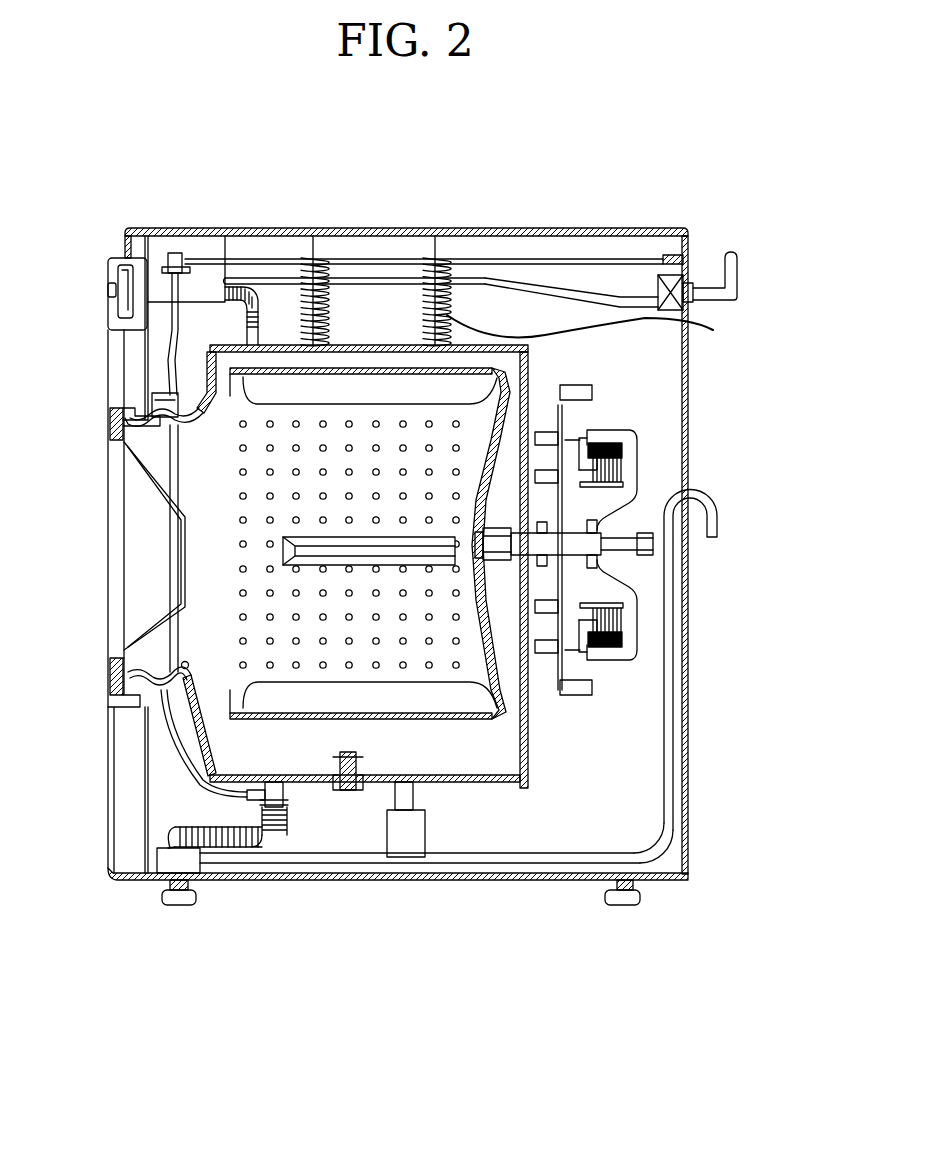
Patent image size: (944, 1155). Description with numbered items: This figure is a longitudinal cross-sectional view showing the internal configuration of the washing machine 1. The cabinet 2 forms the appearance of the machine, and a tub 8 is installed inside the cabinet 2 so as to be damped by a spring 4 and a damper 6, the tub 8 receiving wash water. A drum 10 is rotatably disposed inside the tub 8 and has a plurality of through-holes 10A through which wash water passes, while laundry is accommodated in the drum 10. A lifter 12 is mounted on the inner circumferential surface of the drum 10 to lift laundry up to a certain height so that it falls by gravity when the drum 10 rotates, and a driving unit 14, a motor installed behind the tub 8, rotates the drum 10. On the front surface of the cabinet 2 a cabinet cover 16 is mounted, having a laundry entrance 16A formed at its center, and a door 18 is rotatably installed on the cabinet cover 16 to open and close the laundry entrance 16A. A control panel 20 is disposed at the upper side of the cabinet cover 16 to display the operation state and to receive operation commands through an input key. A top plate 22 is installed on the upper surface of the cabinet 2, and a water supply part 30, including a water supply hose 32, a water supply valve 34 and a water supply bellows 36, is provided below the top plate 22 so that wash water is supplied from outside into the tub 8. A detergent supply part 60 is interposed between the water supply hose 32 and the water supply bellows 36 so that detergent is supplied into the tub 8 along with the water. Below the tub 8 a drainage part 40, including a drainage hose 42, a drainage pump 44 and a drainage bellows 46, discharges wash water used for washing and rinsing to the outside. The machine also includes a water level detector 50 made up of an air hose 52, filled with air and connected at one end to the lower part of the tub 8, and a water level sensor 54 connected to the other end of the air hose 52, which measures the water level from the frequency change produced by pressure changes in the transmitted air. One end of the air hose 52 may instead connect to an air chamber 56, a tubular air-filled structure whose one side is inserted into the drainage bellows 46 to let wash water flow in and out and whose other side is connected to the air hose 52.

The washing machine 1 is at (65, 90).
The cabinet 2 is at (421, 522).
The spring 4 is at (586, 329).
The damper 6 is at (403, 862).
The tub 8 is at (524, 368).
The drum 10 is at (496, 575).
The through-holes 10A is at (482, 660).
The lifter 12 is at (118, 428).
The driving unit 14 is at (628, 582).
The cabinet cover 16 is at (110, 740).
The laundry entrance 16A is at (112, 415).
The door 18 is at (115, 557).
The control panel 20 is at (120, 297).
The top plate 22 is at (662, 232).
The water supply part 30 is at (461, 242).
The water supply hose 32 is at (485, 275).
The water supply valve 34 is at (627, 307).
The water supply bellows 36 is at (330, 260).
The drainage part 40 is at (437, 739).
The drainage hose 42 is at (207, 947).
The drainage pump 44 is at (190, 860).
The drainage bellows 46 is at (257, 860).
The water level detector 50 is at (186, 280).
The air hose 52 is at (170, 250).
The water level sensor 54 is at (178, 255).
The air chamber 56 is at (247, 798).
The detergent supply part 60 is at (212, 275).